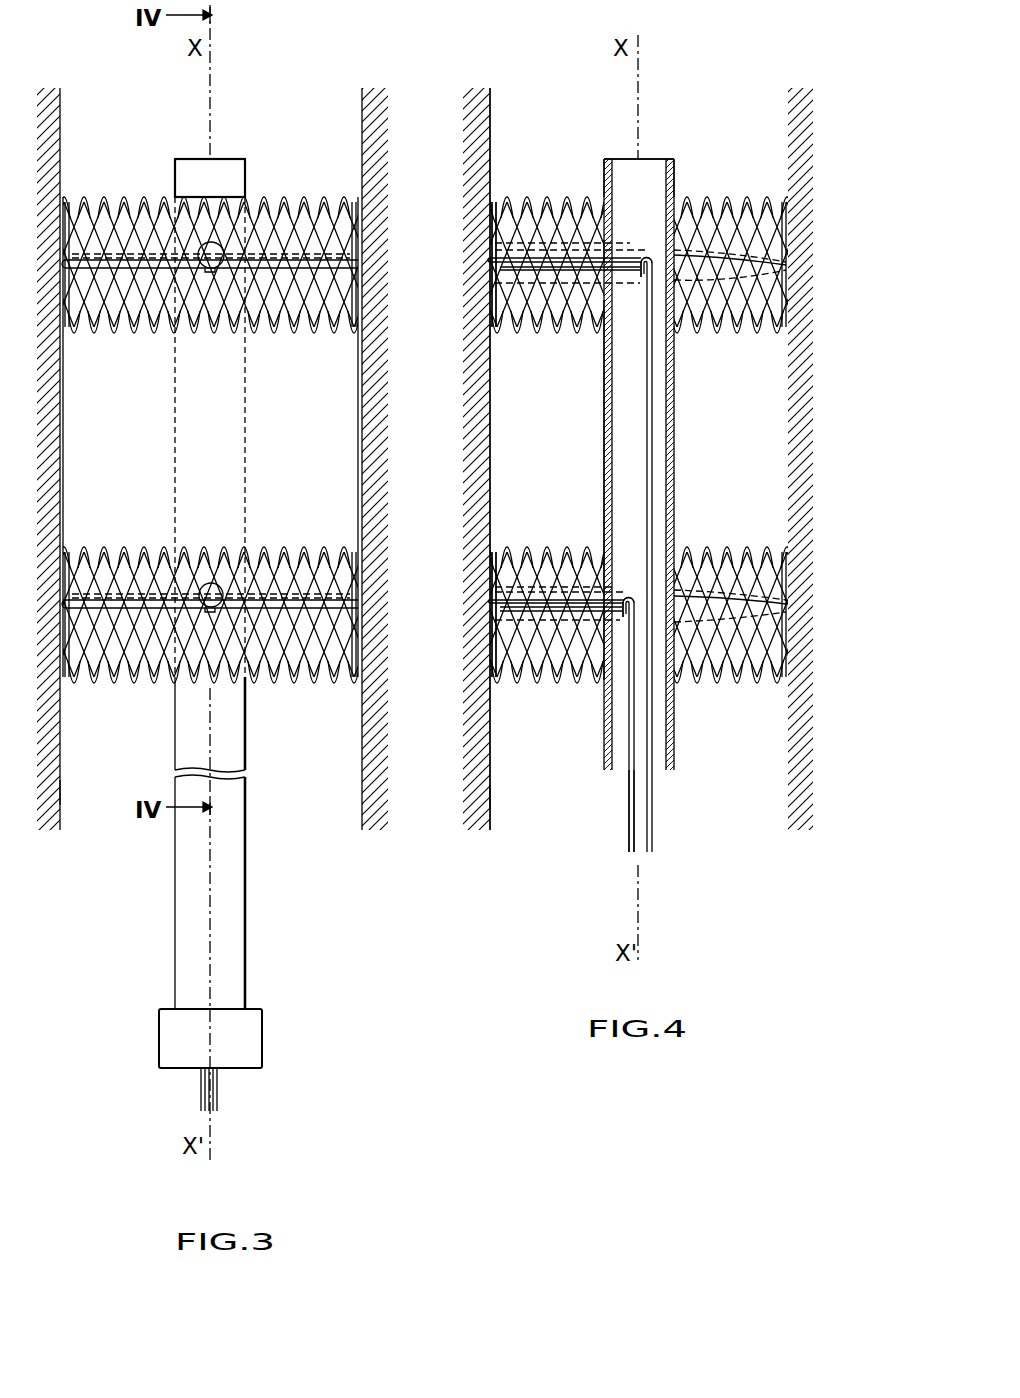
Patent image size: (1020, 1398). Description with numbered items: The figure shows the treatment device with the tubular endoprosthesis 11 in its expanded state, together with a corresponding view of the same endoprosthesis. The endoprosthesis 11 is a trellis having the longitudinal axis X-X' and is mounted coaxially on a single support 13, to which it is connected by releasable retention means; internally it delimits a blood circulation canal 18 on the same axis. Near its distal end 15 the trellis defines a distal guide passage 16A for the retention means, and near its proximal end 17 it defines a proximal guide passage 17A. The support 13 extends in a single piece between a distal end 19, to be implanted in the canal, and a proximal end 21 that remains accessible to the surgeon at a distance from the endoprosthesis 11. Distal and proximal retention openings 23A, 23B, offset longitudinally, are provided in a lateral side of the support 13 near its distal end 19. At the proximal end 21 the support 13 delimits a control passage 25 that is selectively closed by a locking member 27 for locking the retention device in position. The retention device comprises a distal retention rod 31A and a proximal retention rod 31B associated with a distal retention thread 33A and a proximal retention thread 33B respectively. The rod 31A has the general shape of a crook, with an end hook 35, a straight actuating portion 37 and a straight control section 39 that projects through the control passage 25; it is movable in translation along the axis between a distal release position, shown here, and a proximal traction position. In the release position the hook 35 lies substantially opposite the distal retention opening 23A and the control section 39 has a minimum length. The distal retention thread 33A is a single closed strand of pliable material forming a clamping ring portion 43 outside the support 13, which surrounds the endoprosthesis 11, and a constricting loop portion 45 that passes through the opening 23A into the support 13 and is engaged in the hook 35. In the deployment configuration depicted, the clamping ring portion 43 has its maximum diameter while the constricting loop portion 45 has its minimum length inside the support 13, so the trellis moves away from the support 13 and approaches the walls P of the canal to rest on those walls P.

In FIG. 3, the tubular endoprosthesis 11 is at (332, 446).
In FIG. 4, the tubular endoprosthesis 11 is at (495, 518).
In FIG. 3, the support 13 is at (192, 444).
In FIG. 4, the support 13 is at (604, 469).
In FIG. 3, the distal end of the endoprosthesis 15 is at (107, 205).
In FIG. 4, the distal end of the endoprosthesis 15 is at (532, 205).
In FIG. 3, the distal guide passage 16A is at (283, 262).
In FIG. 4, the distal guide passage 16A is at (490, 262).
In FIG. 3, the proximal end of the endoprosthesis 17 is at (104, 677).
In FIG. 4, the proximal end of the endoprosthesis 17 is at (513, 677).
In FIG. 3, the proximal guide passage 17A is at (168, 562).
In FIG. 4, the proximal guide passage 17A is at (490, 602).
In FIG. 4, the blood circulation canal 18 is at (557, 438).
In FIG. 3, the distal end of the support 19 is at (190, 165).
In FIG. 4, the distal end of the support 19 is at (628, 170).
In FIG. 3, the proximal end of the support 21 is at (172, 990).
In FIG. 3, the distal retention opening 23A is at (216, 245).
In FIG. 4, the distal retention opening 23A is at (608, 245).
In FIG. 3, the proximal retention opening 23B is at (198, 562).
In FIG. 4, the proximal retention opening 23B is at (588, 677).
In FIG. 3, the control passage 25 is at (247, 1008).
In FIG. 3, the locking member 27 is at (172, 1043).
In FIG. 4, the distal retention rod 31A is at (660, 398).
In FIG. 4, the proximal retention rod 31B is at (620, 842).
In FIG. 3, the distal retention thread 33A is at (341, 275).
In FIG. 4, the distal retention thread 33A is at (500, 300).
In FIG. 3, the proximal retention thread 33B is at (323, 549).
In FIG. 4, the proximal retention thread 33B is at (563, 549).
In FIG. 4, the end hook 35 is at (647, 256).
In FIG. 4, the straight actuating portion 37 is at (653, 456).
In FIG. 3, the straight control section 39 is at (218, 1102).
In FIG. 3, the clamping ring portion 43 is at (289, 322).
In FIG. 4, the clamping ring portion 43 is at (786, 263).
In FIG. 4, the constricting loop portion 45 is at (568, 300).
In FIG. 3, the walls of the canal P is at (61, 794).
In FIG. 4, the walls of the canal P is at (491, 797).